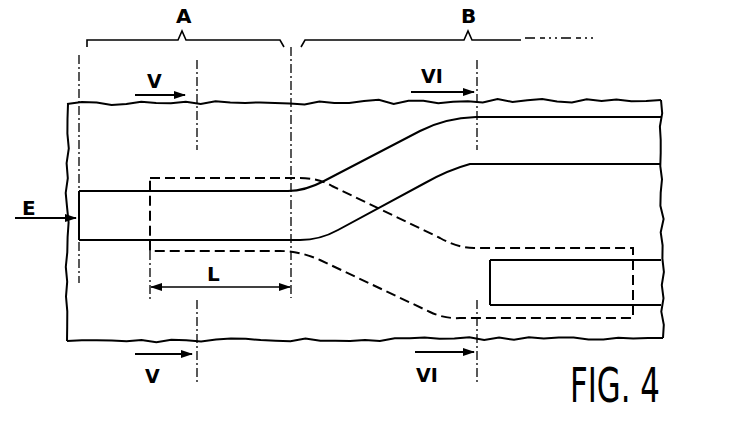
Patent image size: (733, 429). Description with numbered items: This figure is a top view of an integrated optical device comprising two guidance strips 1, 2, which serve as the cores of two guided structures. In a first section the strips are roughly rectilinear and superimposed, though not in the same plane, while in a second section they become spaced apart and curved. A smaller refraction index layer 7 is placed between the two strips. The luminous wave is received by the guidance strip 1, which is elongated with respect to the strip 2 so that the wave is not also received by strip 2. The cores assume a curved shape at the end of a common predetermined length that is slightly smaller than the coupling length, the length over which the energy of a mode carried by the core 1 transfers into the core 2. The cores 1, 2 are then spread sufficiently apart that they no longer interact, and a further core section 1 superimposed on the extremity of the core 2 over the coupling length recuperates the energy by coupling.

The guidance strip 1 is at (97, 226).
The guidance strip 2 is at (148, 251).
The smaller refraction index layer 7 is at (95, 320).